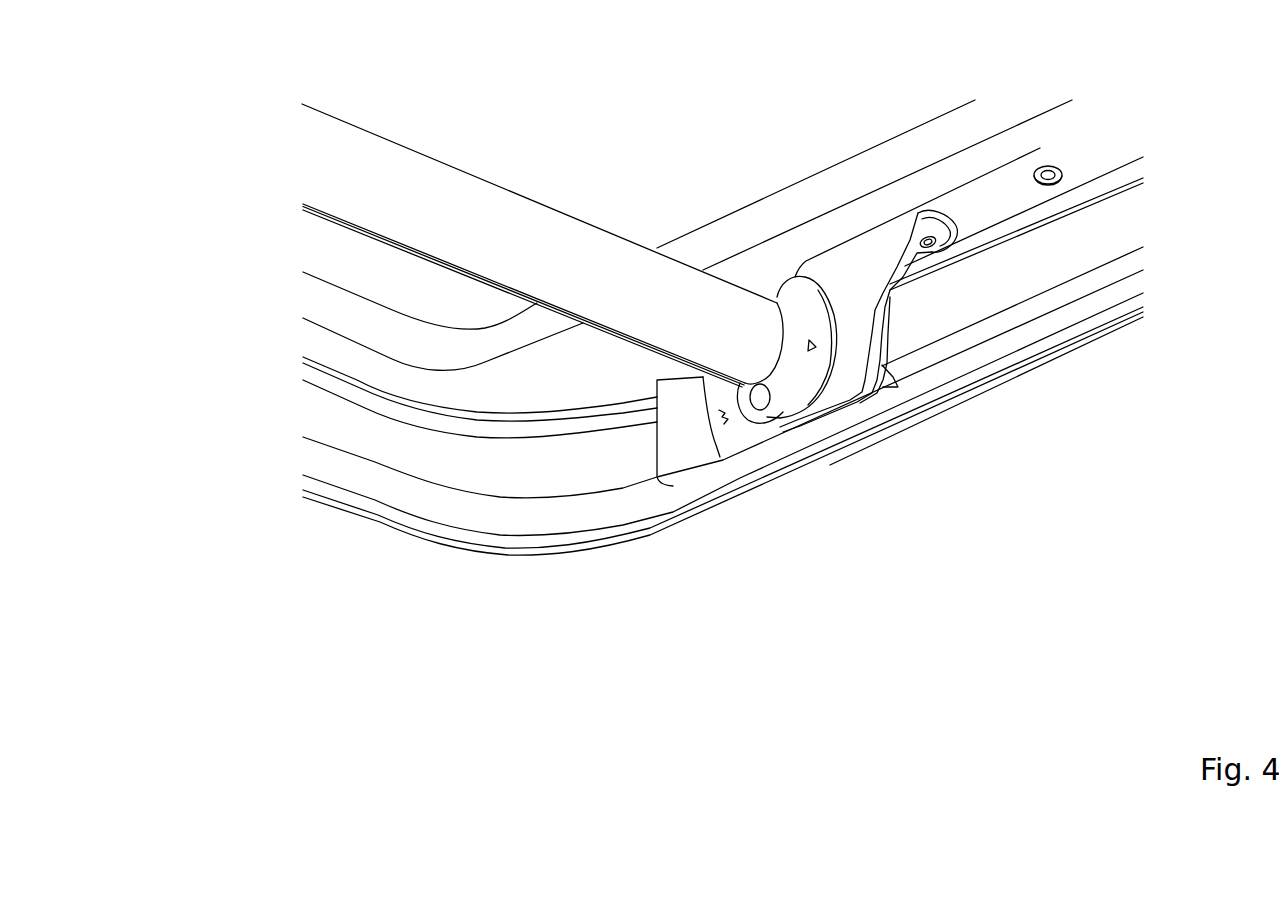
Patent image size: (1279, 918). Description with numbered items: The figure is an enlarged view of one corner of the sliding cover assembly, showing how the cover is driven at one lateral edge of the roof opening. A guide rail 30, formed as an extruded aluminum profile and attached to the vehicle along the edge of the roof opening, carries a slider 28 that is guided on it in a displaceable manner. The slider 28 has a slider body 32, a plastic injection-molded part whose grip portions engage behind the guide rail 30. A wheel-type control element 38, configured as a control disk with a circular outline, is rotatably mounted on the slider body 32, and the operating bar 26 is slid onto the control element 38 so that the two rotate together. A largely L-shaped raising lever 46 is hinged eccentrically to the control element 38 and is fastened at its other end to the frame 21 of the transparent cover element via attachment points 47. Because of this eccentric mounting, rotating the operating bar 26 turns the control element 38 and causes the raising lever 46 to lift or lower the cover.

The frame 21 is at (1047, 143).
The operating bar 26 is at (358, 193).
The slider 28 is at (866, 417).
The guide rail 30 is at (1017, 285).
The slider body 32 is at (742, 450).
The control element 38 is at (795, 378).
The raising lever 46 is at (853, 325).
The attachment point 47 is at (945, 245).